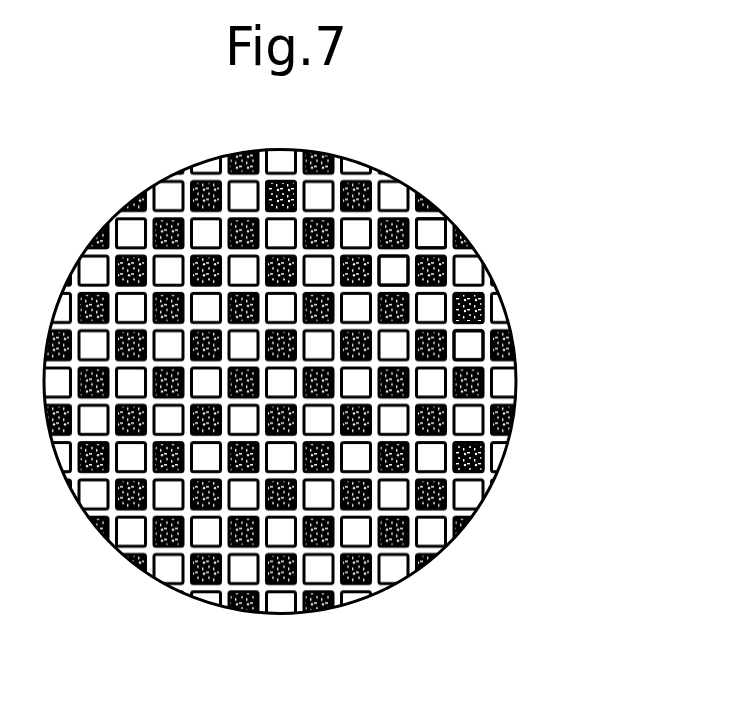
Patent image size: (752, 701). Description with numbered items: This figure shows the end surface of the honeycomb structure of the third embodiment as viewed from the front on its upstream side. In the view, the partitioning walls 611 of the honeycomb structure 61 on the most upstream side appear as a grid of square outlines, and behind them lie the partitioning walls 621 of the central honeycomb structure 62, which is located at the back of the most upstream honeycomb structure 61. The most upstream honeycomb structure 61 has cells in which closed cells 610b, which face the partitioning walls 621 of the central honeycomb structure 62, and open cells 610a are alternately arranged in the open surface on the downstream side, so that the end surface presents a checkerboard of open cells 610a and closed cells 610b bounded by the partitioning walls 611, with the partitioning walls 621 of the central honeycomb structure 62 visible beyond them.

The honeycomb structure on the most upstream side 61 is at (376, 195).
The central honeycomb structure 62 is at (327, 150).
The partitioning walls 611 is at (410, 234).
The open cells 610a is at (395, 272).
The closed cells 610b is at (480, 305).
The partitioning walls 621 is at (282, 184).